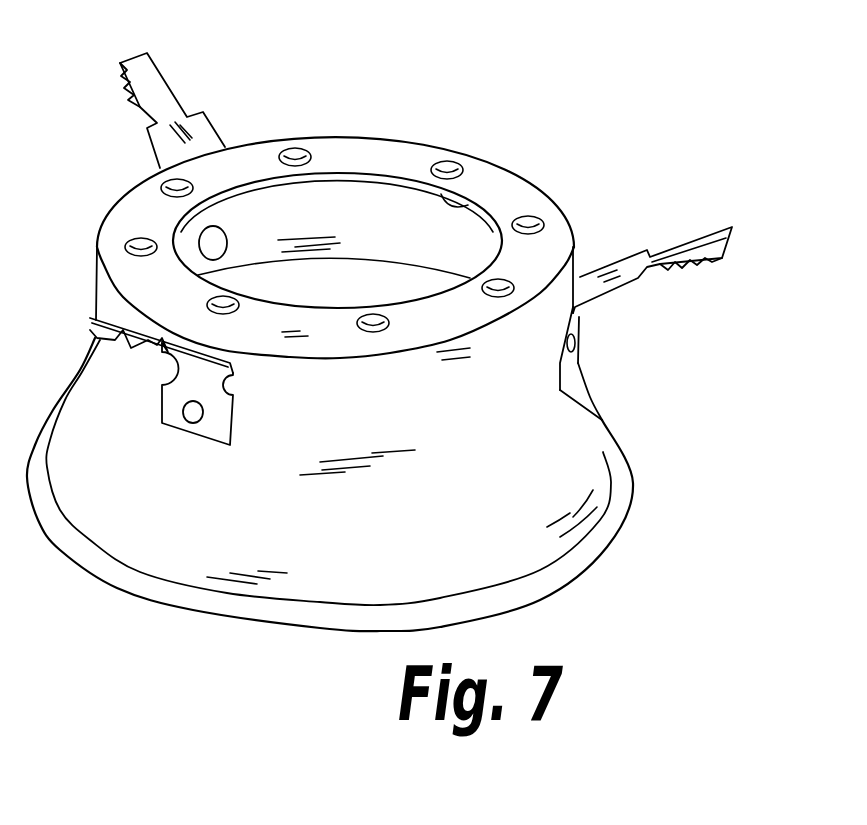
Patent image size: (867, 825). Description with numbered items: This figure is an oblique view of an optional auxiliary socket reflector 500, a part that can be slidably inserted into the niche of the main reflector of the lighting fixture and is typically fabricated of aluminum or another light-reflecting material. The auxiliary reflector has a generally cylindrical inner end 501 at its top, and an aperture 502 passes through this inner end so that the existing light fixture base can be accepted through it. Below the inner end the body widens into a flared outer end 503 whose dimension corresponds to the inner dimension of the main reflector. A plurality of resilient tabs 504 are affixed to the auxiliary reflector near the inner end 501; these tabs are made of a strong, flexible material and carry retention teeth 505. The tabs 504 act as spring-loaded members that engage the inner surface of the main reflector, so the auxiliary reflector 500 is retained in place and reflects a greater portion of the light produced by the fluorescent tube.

The auxiliary socket reflector 500 is at (653, 508).
The inner end 501 is at (395, 157).
The aperture 502 is at (450, 193).
The flared outer end 503 is at (168, 548).
The resilient tabs 504 is at (167, 100).
The retention teeth 505 is at (120, 84).